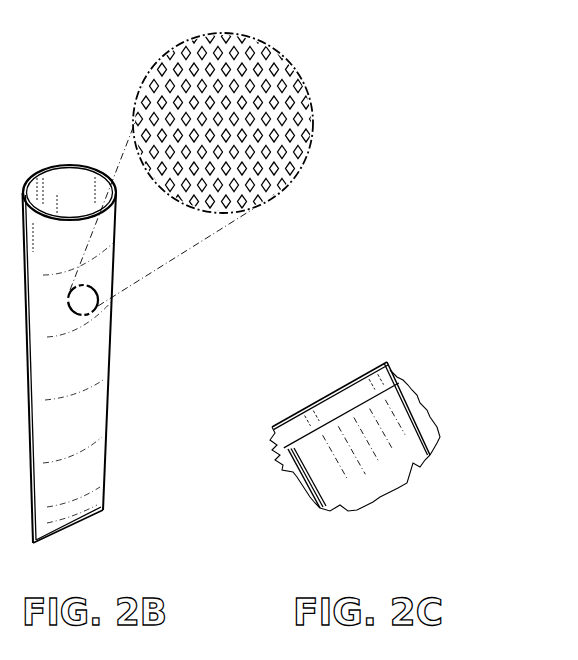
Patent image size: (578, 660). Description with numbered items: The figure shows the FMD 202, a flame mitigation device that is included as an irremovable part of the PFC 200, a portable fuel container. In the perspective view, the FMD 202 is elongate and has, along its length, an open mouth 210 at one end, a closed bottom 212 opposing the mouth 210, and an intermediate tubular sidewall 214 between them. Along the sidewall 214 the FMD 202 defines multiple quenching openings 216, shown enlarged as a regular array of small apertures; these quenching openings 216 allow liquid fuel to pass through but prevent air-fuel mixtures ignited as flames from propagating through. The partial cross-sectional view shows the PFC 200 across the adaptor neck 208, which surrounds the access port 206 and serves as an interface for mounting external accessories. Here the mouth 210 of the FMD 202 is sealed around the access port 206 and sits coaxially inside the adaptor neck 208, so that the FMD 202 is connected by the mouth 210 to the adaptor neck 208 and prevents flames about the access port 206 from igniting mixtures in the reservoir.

In FIG. 2C, the PFC 200 is at (437, 461).
In FIG. 2B, the FMD 202 is at (69, 165).
In FIG. 2C, the FMD 202 is at (360, 407).
In FIG. 2C, the access port 206 is at (356, 455).
In FIG. 2C, the adaptor neck 208 is at (296, 483).
In FIG. 2B, the open mouth 210 is at (116, 206).
In FIG. 2C, the open mouth 210 is at (398, 386).
In FIG. 2B, the closed bottom 212 is at (105, 497).
In FIG. 2B, the intermediate tubular sidewall 214 is at (114, 388).
In FIG. 2B, the quenching openings 216 is at (211, 113).